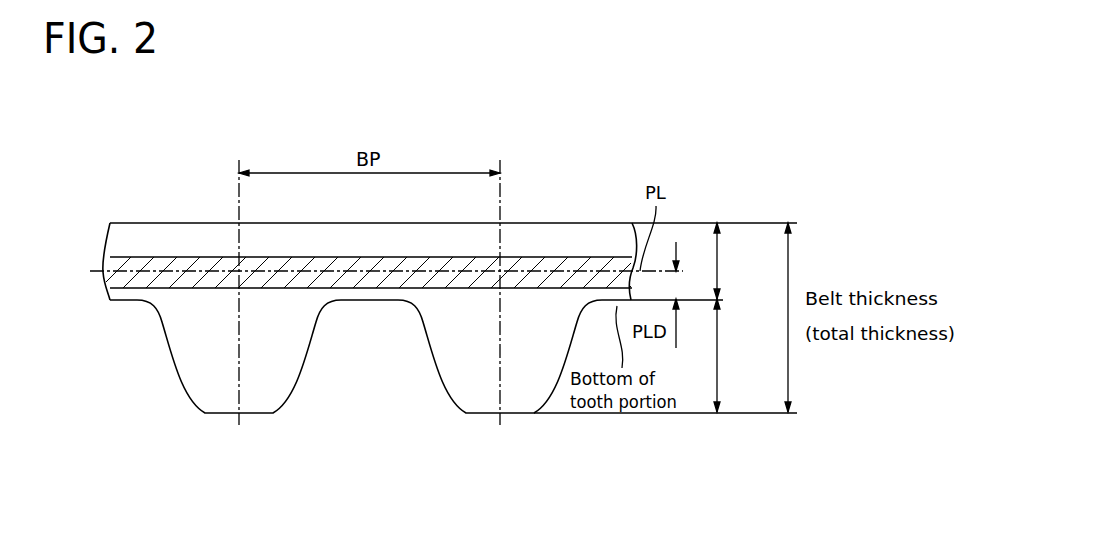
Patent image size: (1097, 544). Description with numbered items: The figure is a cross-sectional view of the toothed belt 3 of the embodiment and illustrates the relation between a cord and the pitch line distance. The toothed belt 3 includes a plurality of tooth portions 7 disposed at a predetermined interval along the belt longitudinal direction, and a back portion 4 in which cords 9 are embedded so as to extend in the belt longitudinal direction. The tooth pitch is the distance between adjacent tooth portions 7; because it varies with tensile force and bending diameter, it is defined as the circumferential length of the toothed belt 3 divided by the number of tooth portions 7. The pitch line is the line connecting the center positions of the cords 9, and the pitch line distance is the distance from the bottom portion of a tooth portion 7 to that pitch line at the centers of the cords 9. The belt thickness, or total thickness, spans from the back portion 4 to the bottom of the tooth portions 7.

The toothed belt 3 is at (438, 324).
The back portion 4 is at (723, 263).
The tooth portion 7 is at (723, 356).
The cord 9 is at (580, 258).